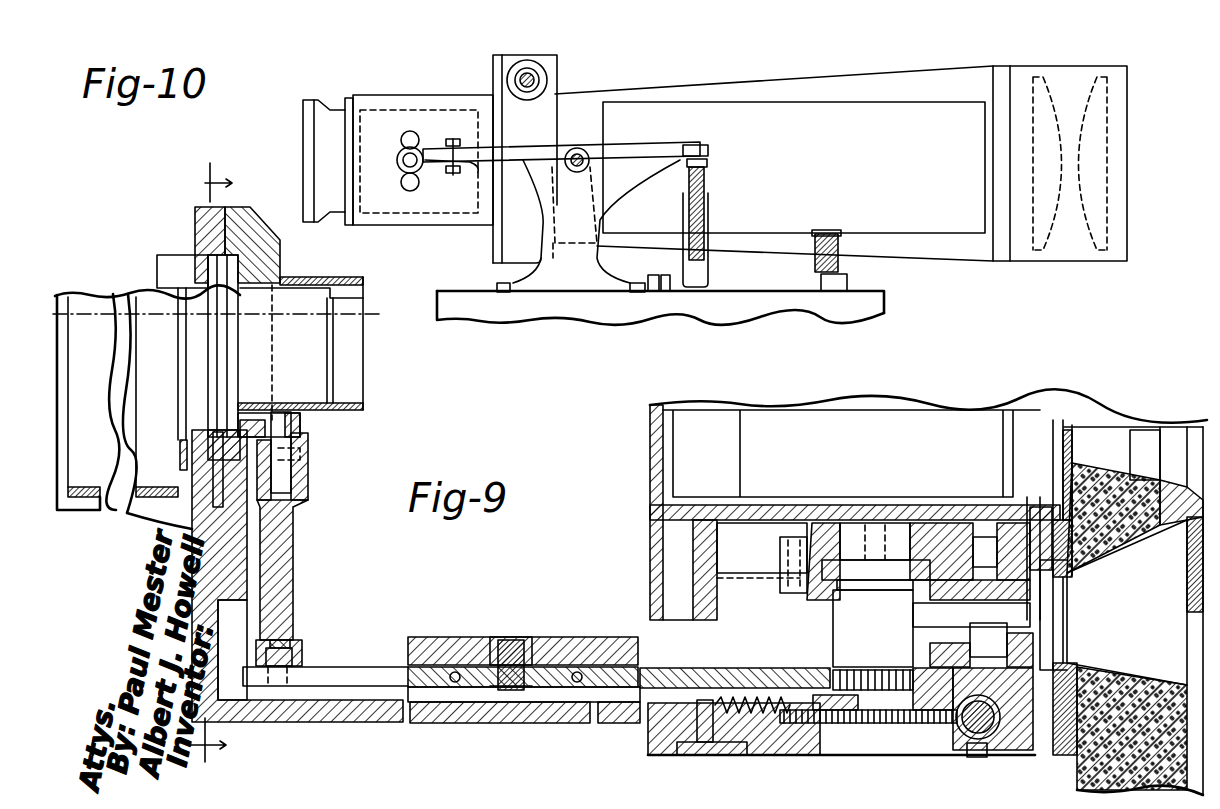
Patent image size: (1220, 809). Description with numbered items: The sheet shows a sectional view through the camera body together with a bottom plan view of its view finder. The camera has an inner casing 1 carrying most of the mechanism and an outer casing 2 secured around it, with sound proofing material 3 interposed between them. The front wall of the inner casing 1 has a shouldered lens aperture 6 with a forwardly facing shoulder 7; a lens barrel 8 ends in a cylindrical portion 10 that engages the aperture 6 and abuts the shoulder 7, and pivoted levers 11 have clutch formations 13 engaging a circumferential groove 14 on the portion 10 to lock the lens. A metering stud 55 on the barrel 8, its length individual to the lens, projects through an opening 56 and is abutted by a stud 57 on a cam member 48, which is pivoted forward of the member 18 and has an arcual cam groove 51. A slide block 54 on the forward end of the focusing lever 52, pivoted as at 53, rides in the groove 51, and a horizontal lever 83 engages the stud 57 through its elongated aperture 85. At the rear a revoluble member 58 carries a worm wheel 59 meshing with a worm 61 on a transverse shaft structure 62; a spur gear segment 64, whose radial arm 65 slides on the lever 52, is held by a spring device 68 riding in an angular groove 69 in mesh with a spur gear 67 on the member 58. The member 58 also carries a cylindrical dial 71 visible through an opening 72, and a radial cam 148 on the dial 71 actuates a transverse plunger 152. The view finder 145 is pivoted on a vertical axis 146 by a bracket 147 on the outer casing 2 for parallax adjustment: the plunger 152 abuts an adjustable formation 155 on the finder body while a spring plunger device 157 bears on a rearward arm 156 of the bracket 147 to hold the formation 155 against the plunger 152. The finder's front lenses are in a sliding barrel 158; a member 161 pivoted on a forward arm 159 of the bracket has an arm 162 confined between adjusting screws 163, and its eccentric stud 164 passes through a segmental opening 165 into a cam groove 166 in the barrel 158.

In FIG. 9, the inner casing 1 is at (360, 722).
In FIG. 10, the outer casing 2 is at (462, 290).
In FIG. 9, the outer casing 2 is at (1198, 432).
In FIG. 9, the sound proofing material 3 is at (1097, 470).
In FIG. 9, the lens aperture 6 is at (240, 240).
In FIG. 9, the shoulder 7 is at (258, 250).
In FIG. 9, the barrel 8 is at (185, 262).
In FIG. 9, the cylindrical portion 10 is at (232, 342).
In FIG. 9, the levers 11 is at (206, 472).
In FIG. 9, the clutch formations 13 is at (185, 268).
In FIG. 9, the circumferential groove 14 is at (218, 382).
In FIG. 9, the member 18 is at (468, 637).
In FIG. 9, the cam member 48 is at (293, 566).
In FIG. 9, the cam groove 51 is at (290, 642).
In FIG. 9, the focusing lever 52 is at (360, 672).
In FIG. 9, the pivot of focusing lever 53 is at (576, 640).
In FIG. 9, the slide block 54 is at (304, 655).
In FIG. 9, the metering stud 55 is at (268, 412).
In FIG. 9, the opening 56 is at (240, 428).
In FIG. 9, the stud 57 is at (292, 420).
In FIG. 9, the revoluble member 58 is at (830, 636).
In FIG. 9, the worm wheel 59 is at (890, 728).
In FIG. 9, the worm 61 is at (972, 755).
In FIG. 9, the shaft structure 62 is at (984, 745).
In FIG. 9, the spur gear segment 64 is at (825, 665).
In FIG. 9, the radial arm 65 is at (660, 668).
In FIG. 9, the spur gear 67 is at (885, 668).
In FIG. 9, the spring device 68 is at (735, 748).
In FIG. 9, the angular groove 69 is at (785, 725).
In FIG. 9, the cylindrical dial 71 is at (1060, 608).
In FIG. 9, the opening 72 is at (1144, 482).
In FIG. 9, the lever 83 is at (300, 440).
In FIG. 9, the aperture 85 is at (300, 458).
In FIG. 10, the view finder 145 is at (835, 88).
In FIG. 10, the pivotal axis 146 is at (585, 152).
In FIG. 10, the bracket 147 is at (545, 238).
In FIG. 9, the radial cam 148 is at (990, 520).
In FIG. 10, the plunger 152 is at (846, 280).
In FIG. 10, the adjustable formation 155 is at (813, 270).
In FIG. 10, the arm 156 is at (655, 158).
In FIG. 10, the spring plunger device 157 is at (708, 180).
In FIG. 10, the barrel 158 is at (334, 112).
In FIG. 10, the arm 159 is at (535, 140).
In FIG. 10, the member 161 is at (400, 168).
In FIG. 10, the arm 162 is at (453, 139).
In FIG. 10, the adjusting screws 163 is at (475, 168).
In FIG. 10, the stud 164 is at (405, 150).
In FIG. 10, the segmental opening 165 is at (418, 188).
In FIG. 10, the cam groove 166 is at (420, 128).